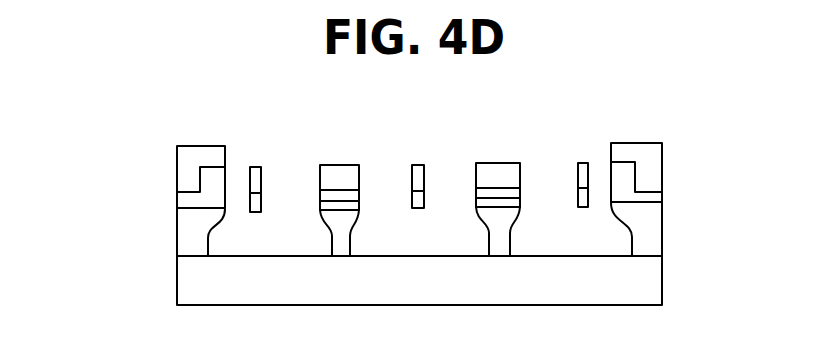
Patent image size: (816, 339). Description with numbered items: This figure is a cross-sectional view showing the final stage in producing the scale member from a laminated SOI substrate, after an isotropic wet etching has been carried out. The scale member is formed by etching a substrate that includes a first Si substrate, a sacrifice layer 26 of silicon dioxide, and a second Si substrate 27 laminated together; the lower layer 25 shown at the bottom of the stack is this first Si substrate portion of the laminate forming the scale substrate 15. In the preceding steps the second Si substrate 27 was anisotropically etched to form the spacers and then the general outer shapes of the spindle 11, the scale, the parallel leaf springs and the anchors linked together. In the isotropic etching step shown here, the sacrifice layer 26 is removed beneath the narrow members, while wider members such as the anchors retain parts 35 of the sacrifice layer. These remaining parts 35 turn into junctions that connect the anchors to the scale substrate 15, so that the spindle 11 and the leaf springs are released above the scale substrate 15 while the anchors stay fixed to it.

The spindle 11 is at (426, 197).
The scale substrate 15 is at (421, 283).
The substrate layer 25 is at (655, 283).
The sacrifice layer 26 is at (655, 235).
The second Si substrate 27 is at (652, 197).
The remaining part of sacrifice layer 35 is at (327, 227).